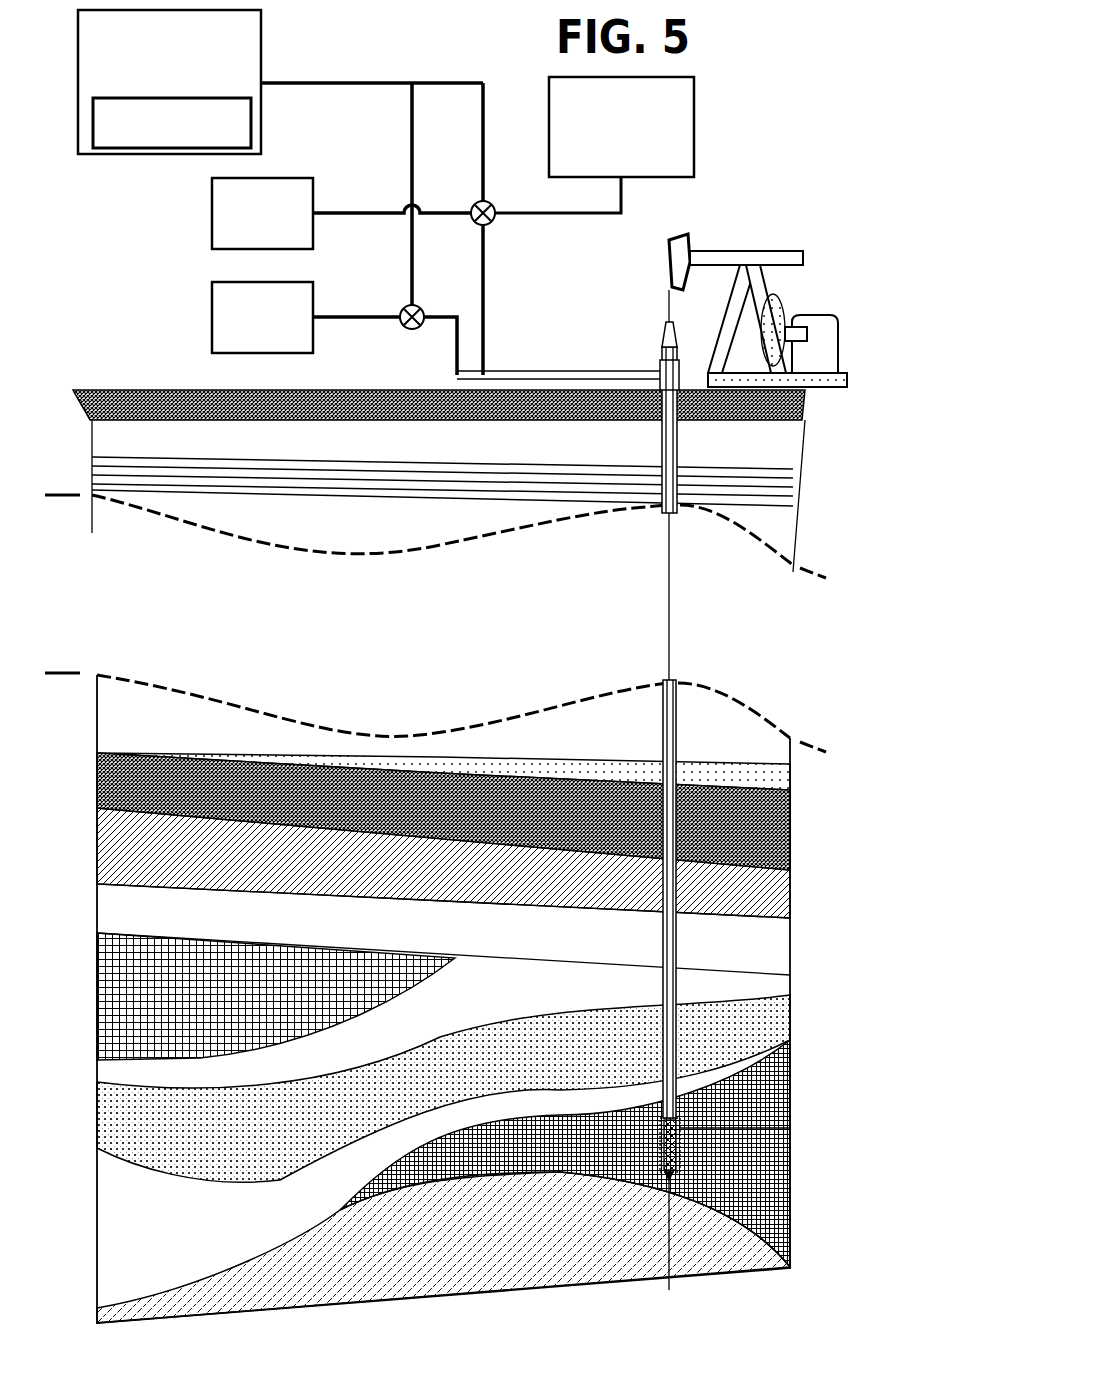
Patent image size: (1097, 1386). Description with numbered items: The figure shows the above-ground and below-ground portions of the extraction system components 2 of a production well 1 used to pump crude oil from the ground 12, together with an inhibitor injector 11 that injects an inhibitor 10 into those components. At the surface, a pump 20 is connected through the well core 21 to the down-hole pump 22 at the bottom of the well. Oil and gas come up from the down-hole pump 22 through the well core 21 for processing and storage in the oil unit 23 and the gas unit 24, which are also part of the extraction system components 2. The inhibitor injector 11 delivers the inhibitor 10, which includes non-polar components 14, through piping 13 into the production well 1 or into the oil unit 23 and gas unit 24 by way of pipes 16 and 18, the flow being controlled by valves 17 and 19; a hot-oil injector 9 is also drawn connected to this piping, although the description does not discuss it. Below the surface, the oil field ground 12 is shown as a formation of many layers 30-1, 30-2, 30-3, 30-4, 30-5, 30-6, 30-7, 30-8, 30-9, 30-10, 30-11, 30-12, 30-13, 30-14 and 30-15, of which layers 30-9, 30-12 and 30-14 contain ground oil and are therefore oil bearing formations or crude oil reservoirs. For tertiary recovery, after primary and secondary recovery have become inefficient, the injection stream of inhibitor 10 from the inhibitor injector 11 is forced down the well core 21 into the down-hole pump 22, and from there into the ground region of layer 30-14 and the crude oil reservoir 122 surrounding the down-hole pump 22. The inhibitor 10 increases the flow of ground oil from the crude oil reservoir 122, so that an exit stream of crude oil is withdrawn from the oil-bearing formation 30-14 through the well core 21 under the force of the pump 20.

The production well 1 is at (783, 222).
The extraction system components 2 is at (172, 253).
The hot-oil injector 9 is at (694, 127).
The inhibitor 10 is at (251, 134).
The inhibitor injector 11 is at (261, 50).
The ground 12 is at (55, 412).
The piping 13 is at (340, 82).
The non-polar components 14 is at (669, 1275).
The pipe 16 is at (325, 212).
The valve 17 is at (490, 224).
The pipe 18 is at (322, 316).
The valve 19 is at (412, 331).
The pump 20 is at (805, 297).
The well core 21 is at (662, 462).
The down-hole pump 22 is at (790, 1128).
The oil unit 23 is at (212, 208).
The gas unit 24 is at (212, 312).
The layer 30-1 is at (830, 395).
The layer 30-2 is at (443, 672).
The layer 30-3 is at (805, 488).
The layer 30-4 is at (435, 623).
The layer 30-5 is at (790, 770).
The layer 30-6 is at (790, 840).
The layer 30-7 is at (778, 897).
The layer 30-8 is at (765, 938).
The layer 30-9 is at (276, 996).
The layer 30-10 is at (491, 993).
The layer 30-11 is at (770, 1020).
The layer 30-12 is at (443, 1088).
The layer 30-13 is at (174, 1243).
The layer 30-14 is at (565, 1153).
The layer 30-15 is at (443, 1247).
The crude oil reservoir 122 is at (805, 1178).